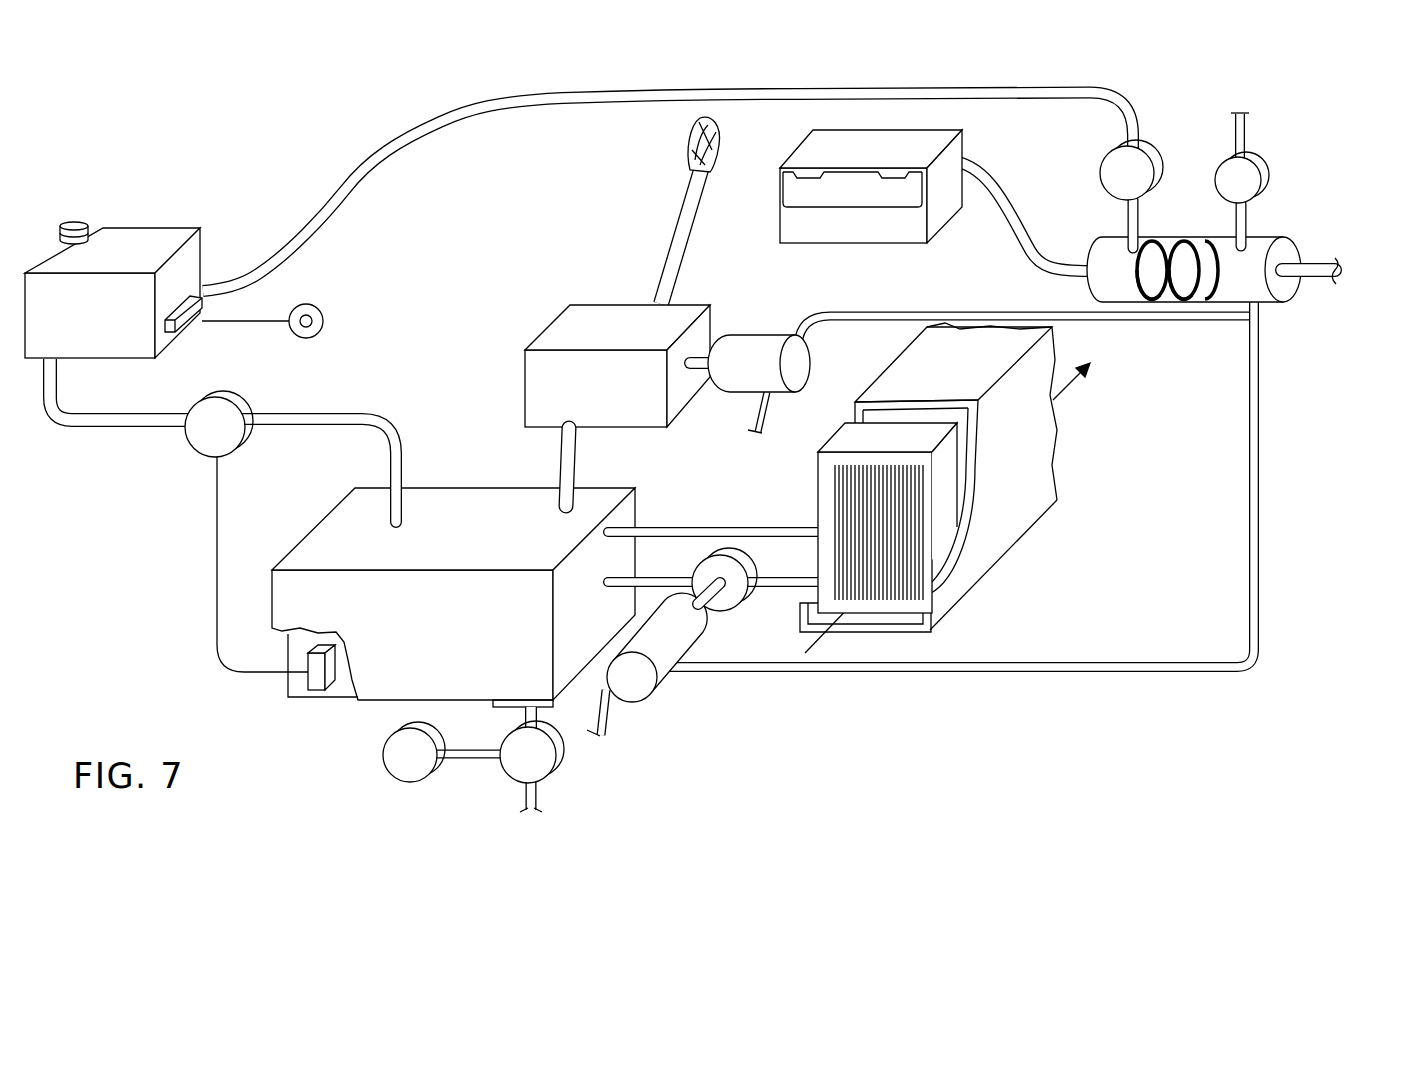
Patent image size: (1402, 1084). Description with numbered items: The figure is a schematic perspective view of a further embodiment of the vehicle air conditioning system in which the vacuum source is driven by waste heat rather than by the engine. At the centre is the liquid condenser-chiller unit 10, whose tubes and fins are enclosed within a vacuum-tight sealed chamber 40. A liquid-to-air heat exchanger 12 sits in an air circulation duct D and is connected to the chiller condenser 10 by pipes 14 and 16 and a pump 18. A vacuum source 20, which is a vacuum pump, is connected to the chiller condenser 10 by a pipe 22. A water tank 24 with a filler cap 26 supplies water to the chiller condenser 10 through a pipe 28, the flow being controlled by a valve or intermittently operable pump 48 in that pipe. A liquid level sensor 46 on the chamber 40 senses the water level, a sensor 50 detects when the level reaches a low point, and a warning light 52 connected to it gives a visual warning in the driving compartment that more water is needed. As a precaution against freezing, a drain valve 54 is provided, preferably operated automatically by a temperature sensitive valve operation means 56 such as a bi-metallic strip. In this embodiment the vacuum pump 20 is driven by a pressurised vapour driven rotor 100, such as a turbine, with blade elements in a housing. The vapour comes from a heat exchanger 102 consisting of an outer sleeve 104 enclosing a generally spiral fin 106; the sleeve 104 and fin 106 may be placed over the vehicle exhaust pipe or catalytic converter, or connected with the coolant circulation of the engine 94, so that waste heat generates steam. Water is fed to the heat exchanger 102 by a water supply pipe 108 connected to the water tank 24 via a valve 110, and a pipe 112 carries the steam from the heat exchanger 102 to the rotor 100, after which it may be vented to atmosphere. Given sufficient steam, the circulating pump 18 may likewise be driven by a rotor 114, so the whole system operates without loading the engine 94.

The liquid condenser-chiller unit 10 is at (407, 653).
The liquid-to-air heat exchanger 12 is at (857, 432).
The pipe 14 is at (748, 525).
The pipe 16 is at (667, 577).
The pump 18 is at (732, 602).
The vacuum source 20 is at (607, 317).
The pipe 22 is at (557, 452).
The water tank 24 is at (117, 242).
The filler cap 26 is at (72, 220).
The pipe 28 is at (67, 430).
The sealed chamber 40 is at (303, 645).
The liquid level sensor 46 is at (308, 677).
The valve or intermittently operable pump 48 is at (200, 433).
The sensor 50 is at (185, 320).
The warning light 52 is at (320, 310).
The drain valve 54 is at (530, 757).
The temperature sensitive valve operation means 56 is at (405, 760).
The engine 94 is at (848, 160).
The pressurised vapour driven rotor 100 is at (758, 343).
The heat exchanger 102 is at (1312, 313).
The outer sleeve 104 is at (1265, 233).
The spiral fin 106 is at (1175, 240).
The water supply pipe 108 is at (572, 107).
The valve 110 is at (1118, 170).
The pipe 112 is at (947, 312).
The rotor 114 is at (690, 642).
The air circulation duct D is at (1023, 475).